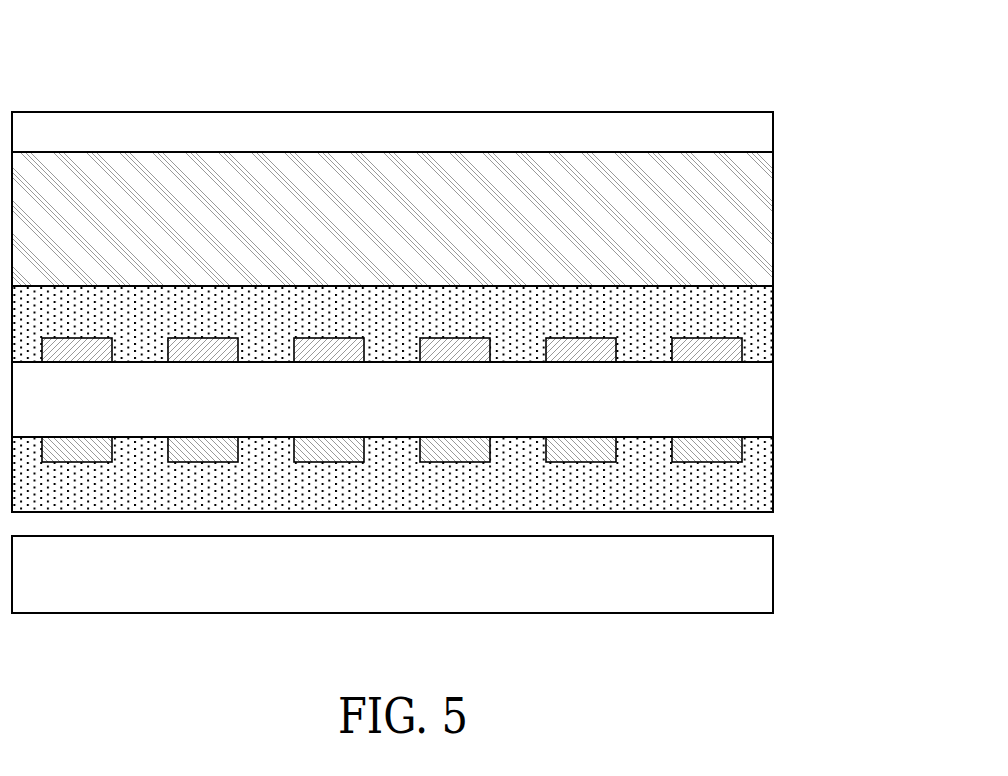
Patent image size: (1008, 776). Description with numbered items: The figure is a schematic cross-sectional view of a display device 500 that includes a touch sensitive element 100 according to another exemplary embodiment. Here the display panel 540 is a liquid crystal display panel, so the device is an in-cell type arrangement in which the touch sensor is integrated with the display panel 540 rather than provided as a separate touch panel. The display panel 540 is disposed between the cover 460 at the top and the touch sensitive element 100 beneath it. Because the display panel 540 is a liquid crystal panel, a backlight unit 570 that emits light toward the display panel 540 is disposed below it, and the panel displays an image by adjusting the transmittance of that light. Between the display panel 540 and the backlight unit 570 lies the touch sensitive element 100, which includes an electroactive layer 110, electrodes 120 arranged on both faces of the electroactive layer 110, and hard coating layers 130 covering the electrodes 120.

The display device 500 is at (752, 47).
The cover 460 is at (742, 135).
The display panel 540 is at (742, 222).
The hard coating layer 130 is at (742, 312).
The electrode 120 is at (593, 345).
The electroactive layer 110 is at (740, 398).
The touch sensitive element 100 is at (857, 305).
The backlight unit 570 is at (742, 574).